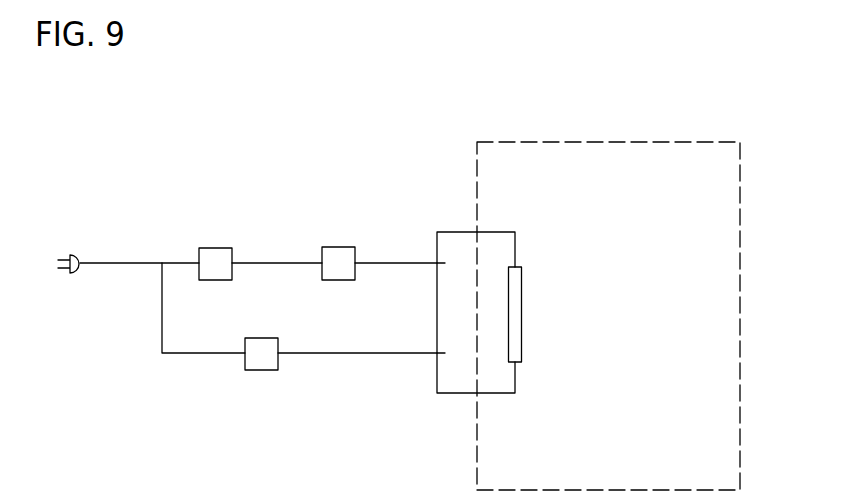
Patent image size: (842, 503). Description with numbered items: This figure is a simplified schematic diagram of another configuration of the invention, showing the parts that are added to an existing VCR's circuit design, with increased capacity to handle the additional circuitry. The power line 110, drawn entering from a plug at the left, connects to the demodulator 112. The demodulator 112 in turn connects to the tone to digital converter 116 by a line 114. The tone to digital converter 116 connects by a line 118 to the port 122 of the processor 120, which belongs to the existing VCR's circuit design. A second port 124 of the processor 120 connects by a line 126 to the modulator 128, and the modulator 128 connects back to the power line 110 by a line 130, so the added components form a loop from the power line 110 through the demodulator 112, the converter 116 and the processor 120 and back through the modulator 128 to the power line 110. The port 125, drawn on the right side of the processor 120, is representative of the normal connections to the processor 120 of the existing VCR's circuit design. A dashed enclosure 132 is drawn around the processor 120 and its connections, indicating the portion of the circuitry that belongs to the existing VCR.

The power line 110 is at (156, 262).
The demodulator 112 is at (227, 250).
The line 114 is at (271, 262).
The tone to digital converter 116 is at (343, 251).
The line 118 is at (389, 263).
The processor 120 is at (488, 232).
The port 122 is at (455, 267).
The port 124 is at (455, 358).
The port 125 is at (522, 327).
The line 126 is at (353, 354).
The modulator 128 is at (243, 361).
The line 130 is at (180, 354).
The enclosure 132 is at (696, 135).